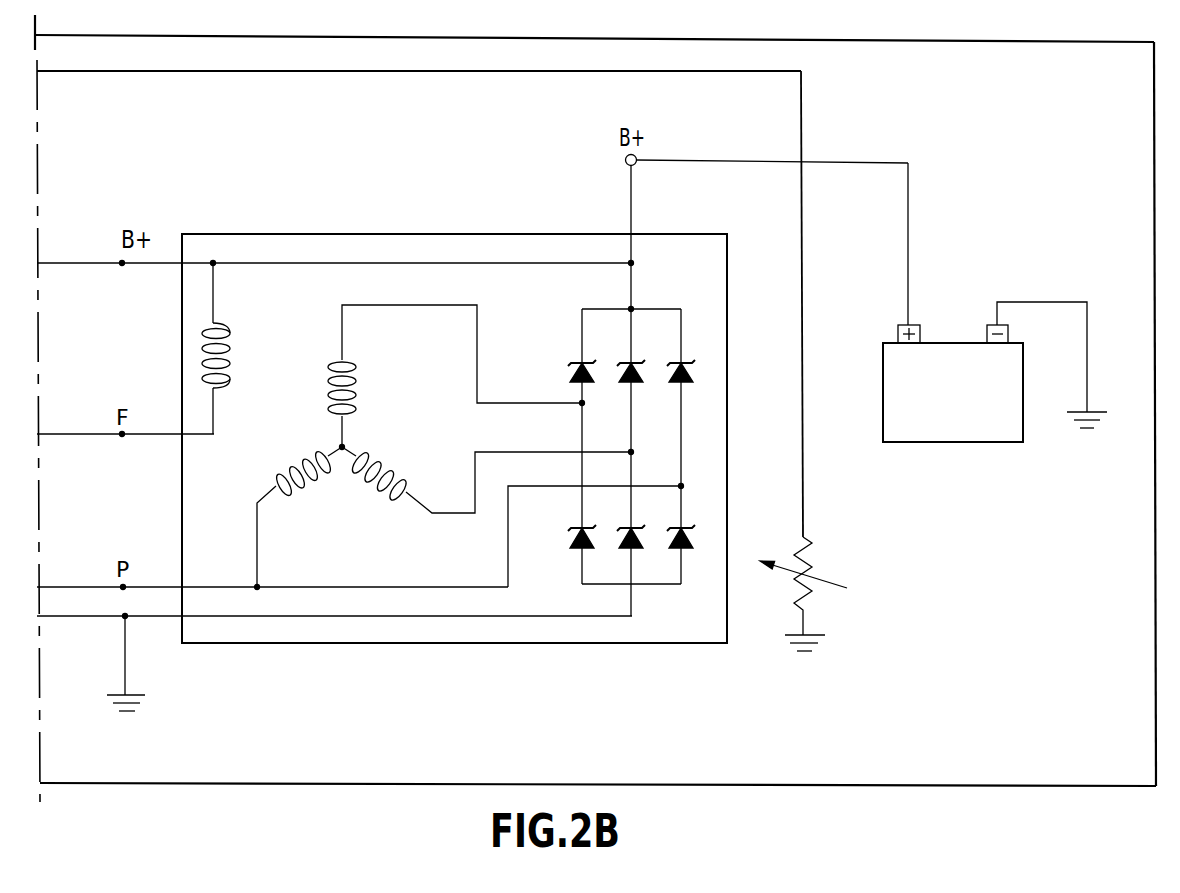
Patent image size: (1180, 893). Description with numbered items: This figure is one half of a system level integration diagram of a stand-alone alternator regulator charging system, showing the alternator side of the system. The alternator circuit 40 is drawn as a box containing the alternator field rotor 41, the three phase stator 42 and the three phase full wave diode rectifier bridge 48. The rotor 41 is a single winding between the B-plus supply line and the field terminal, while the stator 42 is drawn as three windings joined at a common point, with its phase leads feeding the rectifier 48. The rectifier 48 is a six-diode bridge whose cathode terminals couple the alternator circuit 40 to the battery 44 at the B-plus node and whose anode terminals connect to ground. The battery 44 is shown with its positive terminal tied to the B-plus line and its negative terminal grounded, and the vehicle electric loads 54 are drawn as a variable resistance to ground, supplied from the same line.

The alternator circuit 40 is at (436, 234).
The alternator field rotor 41 is at (228, 352).
The three phase stator 42 is at (355, 418).
The battery 44 is at (932, 442).
The three phase full wave diode rectifier bridge 48 is at (663, 584).
The vehicle electric loads 54 is at (833, 600).